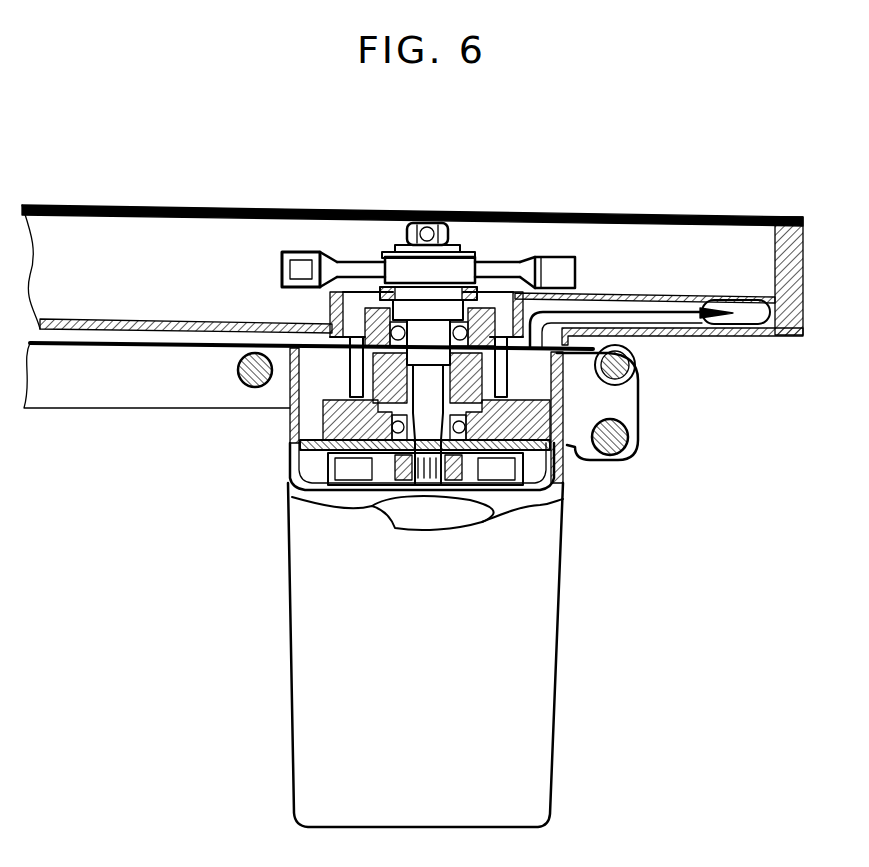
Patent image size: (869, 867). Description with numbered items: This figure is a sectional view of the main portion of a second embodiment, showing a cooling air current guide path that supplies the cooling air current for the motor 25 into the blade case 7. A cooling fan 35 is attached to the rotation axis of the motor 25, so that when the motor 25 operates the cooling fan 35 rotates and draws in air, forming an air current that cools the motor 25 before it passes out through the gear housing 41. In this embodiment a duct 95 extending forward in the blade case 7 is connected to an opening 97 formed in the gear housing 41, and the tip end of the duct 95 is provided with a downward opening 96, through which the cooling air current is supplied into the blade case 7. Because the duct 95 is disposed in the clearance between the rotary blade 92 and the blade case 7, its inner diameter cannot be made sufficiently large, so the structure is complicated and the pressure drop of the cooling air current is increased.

The blade case 7 is at (803, 250).
The rotary blade 92 is at (548, 270).
The duct 95 is at (675, 293).
The downward opening 96 is at (748, 313).
The opening 97 is at (567, 424).
The gear housing 41 is at (543, 416).
The cooling fan 35 is at (510, 472).
The motor 25 is at (455, 515).